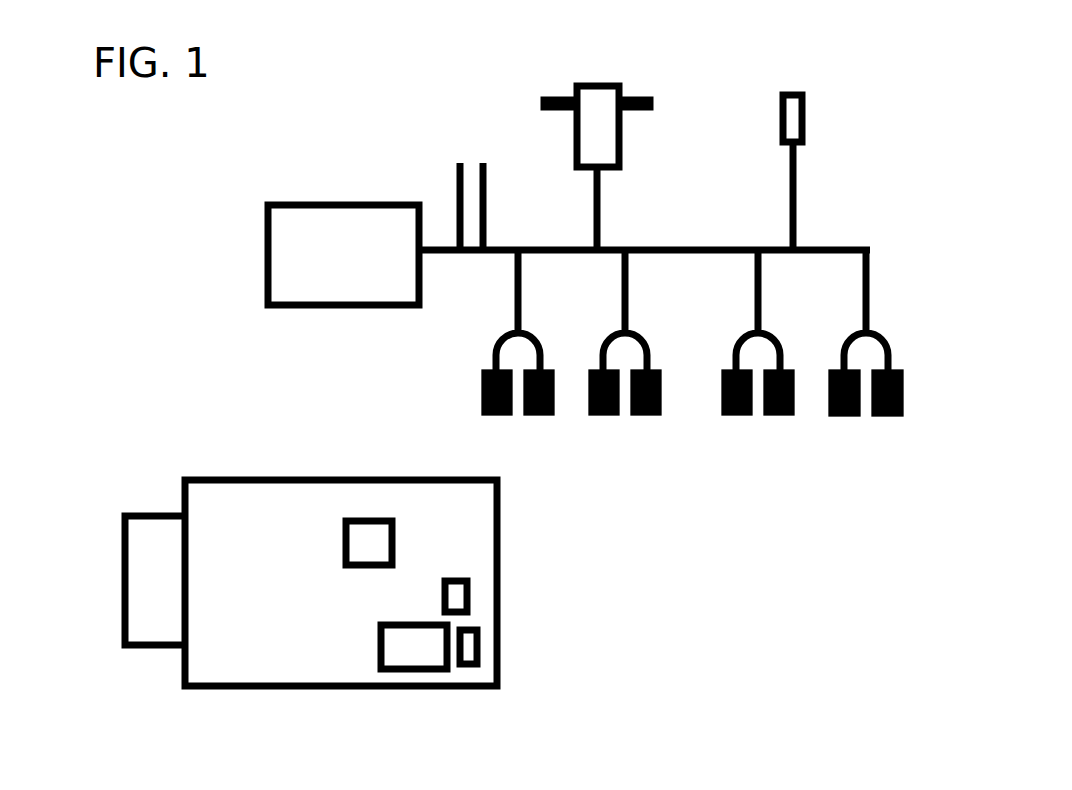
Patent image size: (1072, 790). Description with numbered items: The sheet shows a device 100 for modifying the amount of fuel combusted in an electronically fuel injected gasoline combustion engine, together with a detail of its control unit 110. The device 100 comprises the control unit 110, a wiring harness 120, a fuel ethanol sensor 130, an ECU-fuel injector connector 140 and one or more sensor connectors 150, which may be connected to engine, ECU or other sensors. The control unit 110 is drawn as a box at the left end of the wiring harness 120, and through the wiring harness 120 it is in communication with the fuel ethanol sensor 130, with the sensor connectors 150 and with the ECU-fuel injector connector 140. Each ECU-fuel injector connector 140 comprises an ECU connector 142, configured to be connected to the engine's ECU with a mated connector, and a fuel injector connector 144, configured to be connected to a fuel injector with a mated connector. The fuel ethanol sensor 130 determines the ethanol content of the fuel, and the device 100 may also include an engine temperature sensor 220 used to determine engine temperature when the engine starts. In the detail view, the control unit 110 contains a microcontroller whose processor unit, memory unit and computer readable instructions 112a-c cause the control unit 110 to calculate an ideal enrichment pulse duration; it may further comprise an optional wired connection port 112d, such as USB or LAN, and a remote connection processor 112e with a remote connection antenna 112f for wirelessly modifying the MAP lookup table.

In FIG. 1, the device for modifying an amount of fuel combusted 100 is at (1052, 46).
In FIG. 1, the control unit 110 is at (294, 219).
In FIG. 2, the control unit 110 is at (159, 496).
In FIG. 1, the wiring harness 120 is at (872, 234).
In FIG. 1, the fuel ethanol sensor 130 is at (640, 77).
In FIG. 1, the ECU-fuel injector connector 140 is at (903, 341).
In FIG. 1, the ECU connector 142 is at (839, 431).
In FIG. 1, the fuel injector connector 144 is at (917, 423).
In FIG. 1, the sensor connectors 150 is at (448, 148).
In FIG. 1, the engine temperature sensor 220 is at (814, 105).
In FIG. 2, the processor unit, memory unit and computer readable instructions 112a-c is at (410, 543).
In FIG. 2, the wired connection port 112d is at (491, 597).
In FIG. 2, the remote connection processor 112e is at (372, 660).
In FIG. 2, the remote connection antenna 112f is at (490, 672).